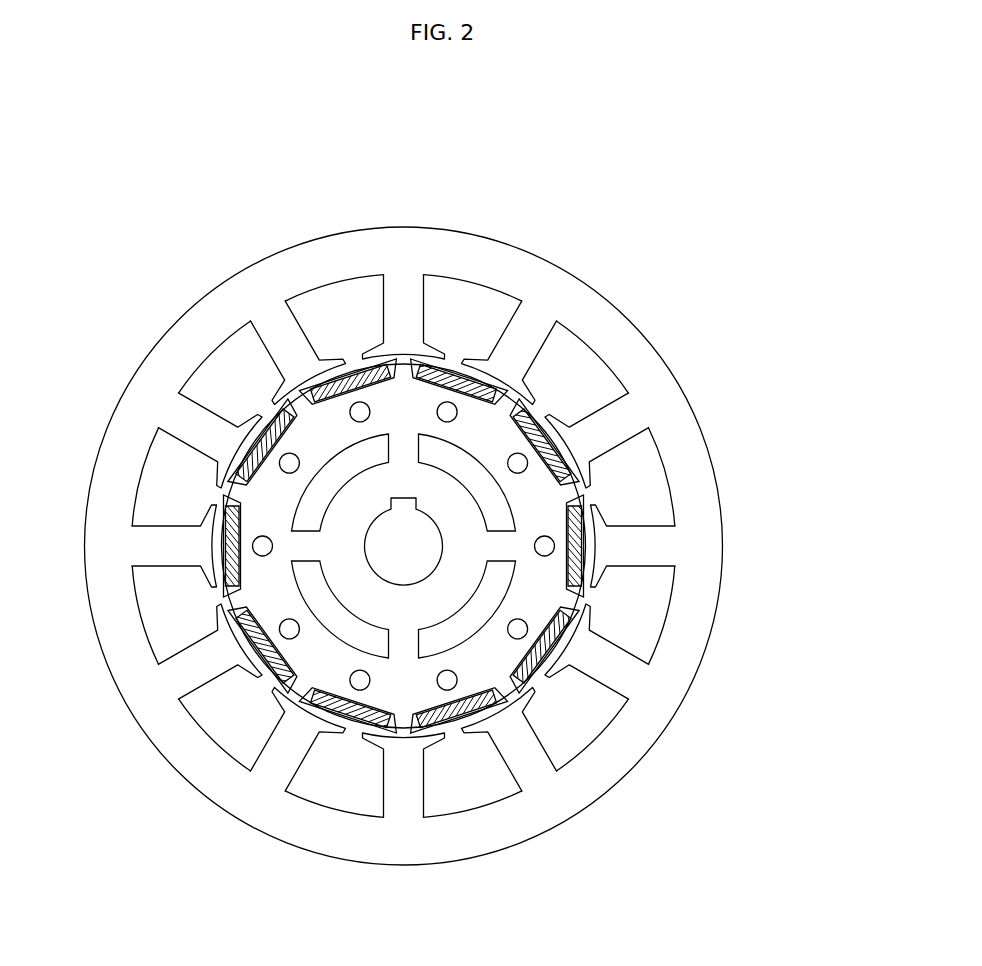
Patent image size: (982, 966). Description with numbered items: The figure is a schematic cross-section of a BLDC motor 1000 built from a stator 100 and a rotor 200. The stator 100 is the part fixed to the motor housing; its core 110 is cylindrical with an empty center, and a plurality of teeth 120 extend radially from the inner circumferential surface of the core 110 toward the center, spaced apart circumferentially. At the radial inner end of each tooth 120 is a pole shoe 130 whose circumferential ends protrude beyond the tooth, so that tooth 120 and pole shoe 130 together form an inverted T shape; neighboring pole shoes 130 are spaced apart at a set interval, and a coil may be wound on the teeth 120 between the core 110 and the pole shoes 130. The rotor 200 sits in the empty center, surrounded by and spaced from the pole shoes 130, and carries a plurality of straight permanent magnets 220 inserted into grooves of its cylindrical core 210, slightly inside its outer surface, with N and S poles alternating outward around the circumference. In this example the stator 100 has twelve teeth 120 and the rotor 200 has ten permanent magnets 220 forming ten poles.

The BLDC motor 1000 is at (529, 212).
The stator 100 is at (578, 265).
The core 110 is at (593, 307).
The teeth 120 is at (627, 418).
The pole shoes 130 is at (438, 358).
The rotor 200 is at (590, 501).
The core 210 is at (600, 607).
The permanent magnets 220 is at (593, 538).